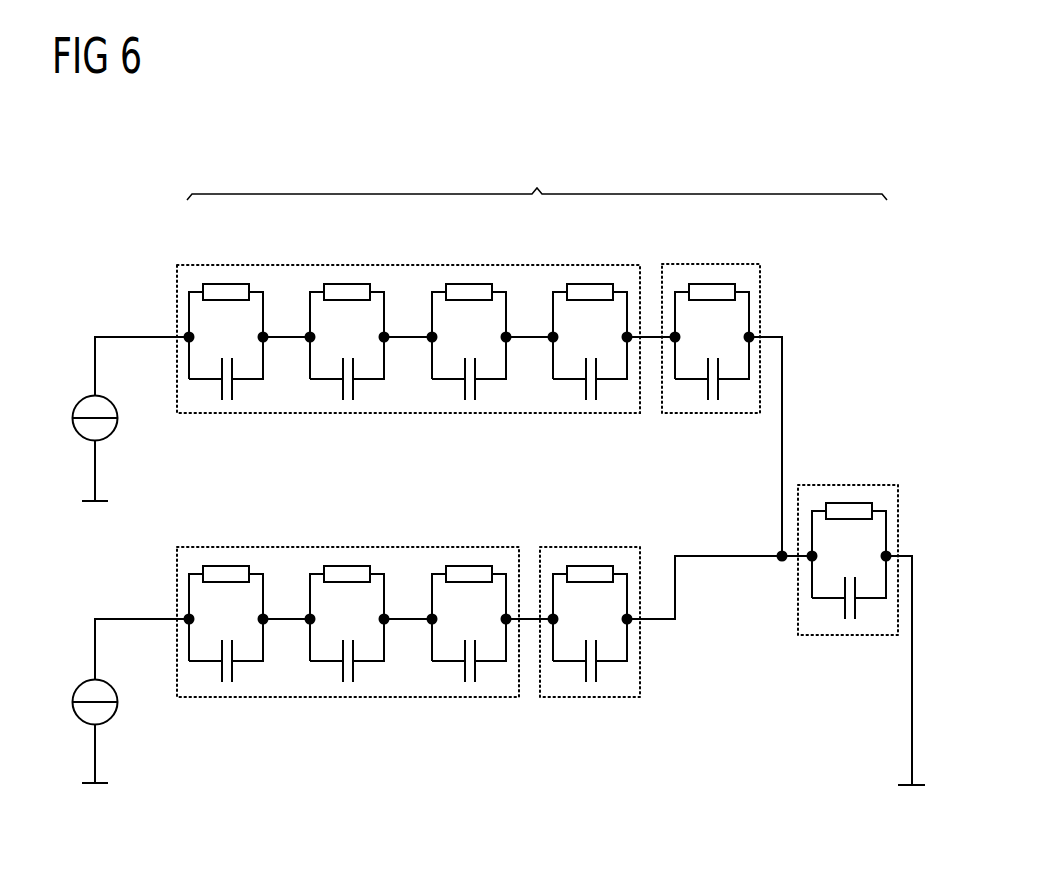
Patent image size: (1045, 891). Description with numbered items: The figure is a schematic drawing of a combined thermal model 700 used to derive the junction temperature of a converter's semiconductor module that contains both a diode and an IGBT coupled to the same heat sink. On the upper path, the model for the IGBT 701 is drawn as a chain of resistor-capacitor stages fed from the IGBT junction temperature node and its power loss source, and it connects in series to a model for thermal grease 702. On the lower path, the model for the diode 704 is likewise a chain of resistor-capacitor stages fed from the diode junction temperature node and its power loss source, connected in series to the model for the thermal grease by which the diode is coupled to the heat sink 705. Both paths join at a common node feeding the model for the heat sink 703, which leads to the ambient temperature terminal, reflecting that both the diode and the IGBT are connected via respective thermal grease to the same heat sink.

The combined thermal model 700 is at (182, 147).
The model for the IGBT 701 is at (410, 265).
The model for thermal grease 702 is at (707, 264).
The model for the heat sink 703 is at (845, 485).
The model for the diode 704 is at (345, 547).
The model for the thermal grease by which the diode is coupled to the heat sink 705 is at (587, 547).